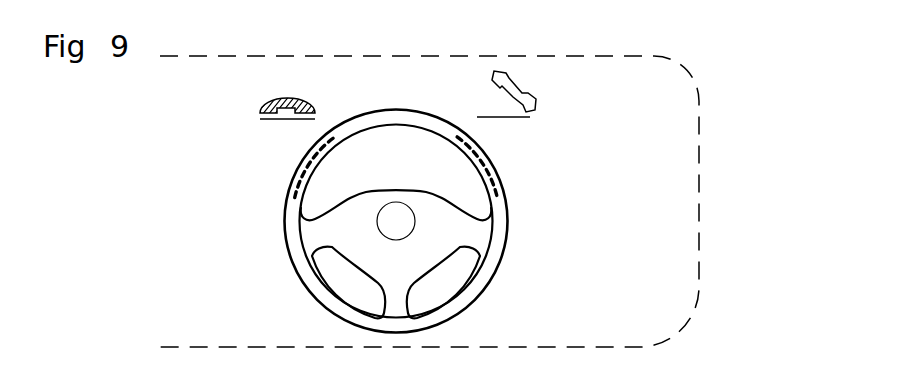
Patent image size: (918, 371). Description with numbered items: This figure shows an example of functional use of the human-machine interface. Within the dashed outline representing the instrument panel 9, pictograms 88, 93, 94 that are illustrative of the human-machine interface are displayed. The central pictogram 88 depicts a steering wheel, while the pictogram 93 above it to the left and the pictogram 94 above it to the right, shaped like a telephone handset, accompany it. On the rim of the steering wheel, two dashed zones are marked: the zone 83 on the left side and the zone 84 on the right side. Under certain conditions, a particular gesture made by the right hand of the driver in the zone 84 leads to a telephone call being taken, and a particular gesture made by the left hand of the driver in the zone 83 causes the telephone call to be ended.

The instrument panel 9 is at (697, 97).
The pictogram 88 is at (514, 239).
The zone 83 is at (303, 173).
The zone 84 is at (488, 171).
The pictogram 93 is at (287, 101).
The pictogram 94 is at (523, 85).